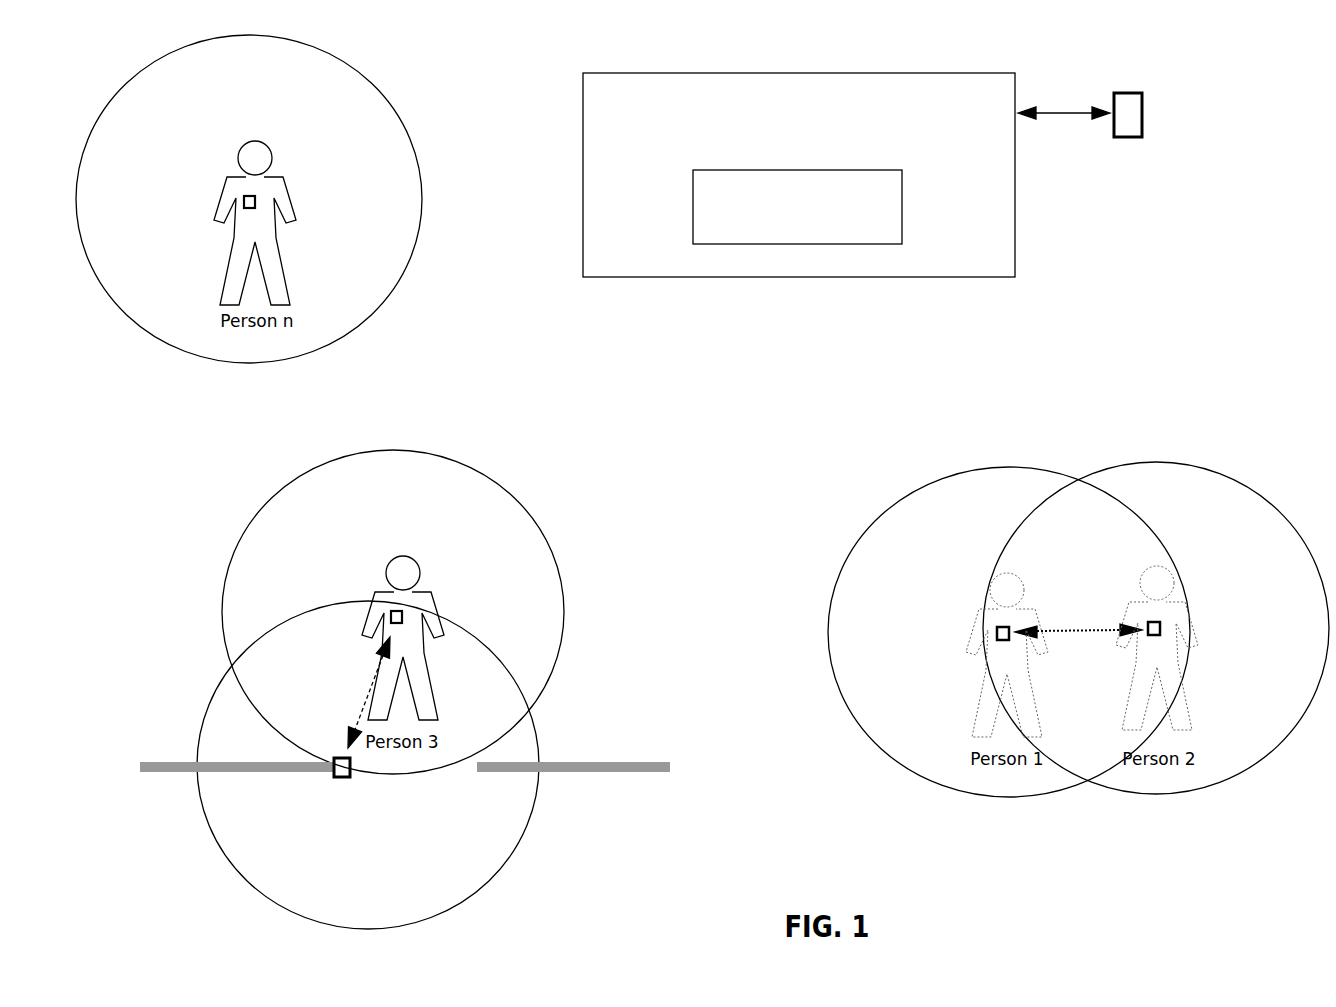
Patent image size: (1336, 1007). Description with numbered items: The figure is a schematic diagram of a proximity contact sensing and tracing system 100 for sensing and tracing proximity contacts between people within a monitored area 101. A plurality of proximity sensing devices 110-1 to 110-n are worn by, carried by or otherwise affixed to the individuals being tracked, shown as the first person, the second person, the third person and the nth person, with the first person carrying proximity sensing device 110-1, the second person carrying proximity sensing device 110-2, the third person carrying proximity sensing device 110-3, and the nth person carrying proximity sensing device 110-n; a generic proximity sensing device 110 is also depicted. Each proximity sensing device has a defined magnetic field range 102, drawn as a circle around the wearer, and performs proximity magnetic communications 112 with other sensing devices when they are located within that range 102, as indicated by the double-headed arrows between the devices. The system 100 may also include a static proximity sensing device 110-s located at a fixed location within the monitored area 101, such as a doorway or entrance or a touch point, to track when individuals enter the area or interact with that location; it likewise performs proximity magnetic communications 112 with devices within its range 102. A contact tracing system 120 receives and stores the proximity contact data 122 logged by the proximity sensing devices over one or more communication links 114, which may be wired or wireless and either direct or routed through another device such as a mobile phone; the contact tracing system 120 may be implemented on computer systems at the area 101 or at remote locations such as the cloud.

The proximity contact sensing and tracing system 100 is at (1211, 157).
The monitored area 101 is at (633, 469).
The magnetic field range 102 is at (365, 322).
The proximity sensing device 110 is at (1127, 139).
The proximity sensing device 110-1 is at (996, 633).
The proximity sensing device 110-2 is at (1165, 629).
The proximity sensing device 110-3 is at (390, 613).
The proximity sensing device 110-n is at (241, 200).
The static proximity sensing device 110-s is at (341, 778).
The proximity magnetic communications 112 is at (363, 712).
The communication link 114 is at (1070, 116).
The contact tracing system 120 is at (720, 277).
The proximity contact data 122 is at (693, 205).